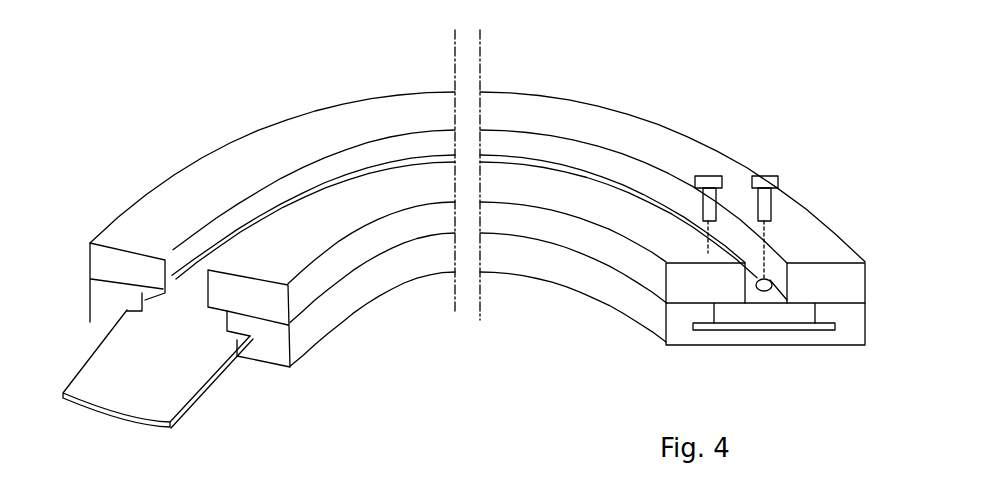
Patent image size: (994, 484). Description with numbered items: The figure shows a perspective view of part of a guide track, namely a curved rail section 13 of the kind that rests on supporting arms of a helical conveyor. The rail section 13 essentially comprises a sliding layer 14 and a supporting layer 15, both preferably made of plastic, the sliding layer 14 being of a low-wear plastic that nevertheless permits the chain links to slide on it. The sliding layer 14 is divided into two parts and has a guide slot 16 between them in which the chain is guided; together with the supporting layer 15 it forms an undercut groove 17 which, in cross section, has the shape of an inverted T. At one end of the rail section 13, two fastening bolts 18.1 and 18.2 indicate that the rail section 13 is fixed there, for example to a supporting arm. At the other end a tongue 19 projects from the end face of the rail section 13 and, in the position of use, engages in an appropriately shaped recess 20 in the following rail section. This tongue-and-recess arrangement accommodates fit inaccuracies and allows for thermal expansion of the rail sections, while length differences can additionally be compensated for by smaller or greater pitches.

The rail section 13 is at (370, 89).
The sliding layer 14 is at (136, 225).
The supporting layer 15 is at (362, 290).
The guide slot 16 is at (246, 215).
The undercut groove 17 is at (193, 305).
The fastening bolt 18.1 is at (707, 181).
The fastening bolt 18.2 is at (765, 181).
The tongue 19 is at (167, 390).
The recess 20 is at (783, 327).